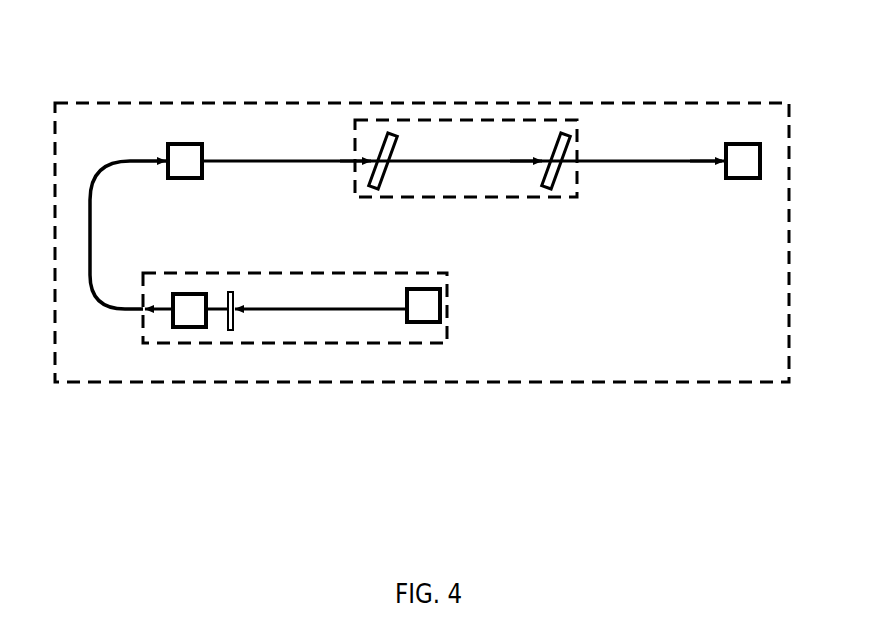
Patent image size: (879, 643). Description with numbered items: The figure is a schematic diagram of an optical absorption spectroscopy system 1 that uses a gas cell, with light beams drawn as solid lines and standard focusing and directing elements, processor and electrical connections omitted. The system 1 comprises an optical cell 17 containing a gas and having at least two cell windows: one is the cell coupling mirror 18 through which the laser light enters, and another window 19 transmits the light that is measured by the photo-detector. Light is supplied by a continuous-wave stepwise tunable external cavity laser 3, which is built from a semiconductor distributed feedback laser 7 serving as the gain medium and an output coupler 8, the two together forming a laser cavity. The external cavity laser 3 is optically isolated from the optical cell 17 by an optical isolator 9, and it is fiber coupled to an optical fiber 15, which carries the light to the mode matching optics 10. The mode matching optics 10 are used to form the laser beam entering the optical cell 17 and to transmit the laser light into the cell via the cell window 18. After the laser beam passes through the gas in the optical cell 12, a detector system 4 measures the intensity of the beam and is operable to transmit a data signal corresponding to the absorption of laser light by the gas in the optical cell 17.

The system 1 is at (670, 348).
The continuous-wave stepwise tunable external cavity laser 3 is at (296, 345).
The detector system 4 is at (738, 134).
The semiconductor distributed feedback laser 7 is at (417, 328).
The output coupler 8 is at (228, 341).
The optical isolator 9 is at (193, 333).
The mode matching optics 10 is at (185, 138).
The optical cell 12 is at (340, 313).
The optical fiber 15 is at (118, 317).
The optical cell 17 is at (473, 118).
The cell coupling mirror 18 is at (382, 128).
The window 19 is at (553, 130).